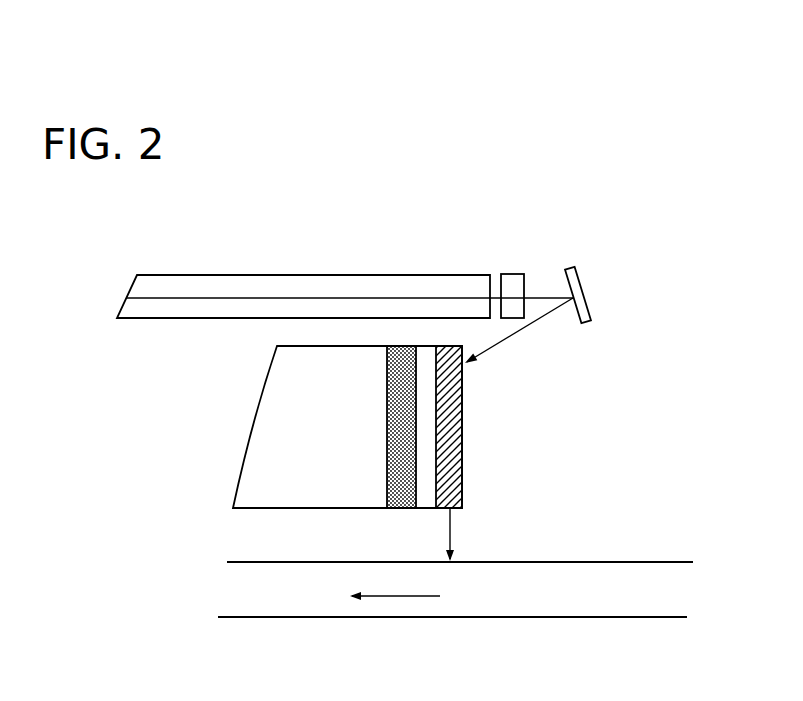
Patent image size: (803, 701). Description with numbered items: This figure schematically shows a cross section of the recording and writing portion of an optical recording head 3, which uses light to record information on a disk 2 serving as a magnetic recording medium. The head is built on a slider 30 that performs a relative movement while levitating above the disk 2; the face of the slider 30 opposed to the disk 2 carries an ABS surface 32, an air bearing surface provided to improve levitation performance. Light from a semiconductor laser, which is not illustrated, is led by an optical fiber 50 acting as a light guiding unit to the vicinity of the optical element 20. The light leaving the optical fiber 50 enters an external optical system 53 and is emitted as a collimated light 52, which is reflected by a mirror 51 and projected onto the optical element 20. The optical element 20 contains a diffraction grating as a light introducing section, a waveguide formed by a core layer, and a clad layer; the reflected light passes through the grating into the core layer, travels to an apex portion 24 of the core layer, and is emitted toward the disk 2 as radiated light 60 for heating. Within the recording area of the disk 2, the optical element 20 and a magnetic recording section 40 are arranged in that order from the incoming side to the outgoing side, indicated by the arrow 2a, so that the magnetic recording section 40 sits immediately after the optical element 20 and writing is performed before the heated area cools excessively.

The disk 2 is at (570, 618).
The arrow 2a is at (414, 596).
The optical recording head 3 is at (278, 266).
The optical element 20 is at (463, 447).
The apex portion 24 is at (463, 511).
The slider 30 is at (273, 418).
The ABS surface 32 is at (302, 510).
The magnetic recording section 40 is at (402, 510).
The optical fiber 50 is at (172, 275).
The mirror 51 is at (590, 290).
The collimated light 52 is at (551, 297).
The external optical system 53 is at (515, 274).
The radiated light 60 is at (452, 538).